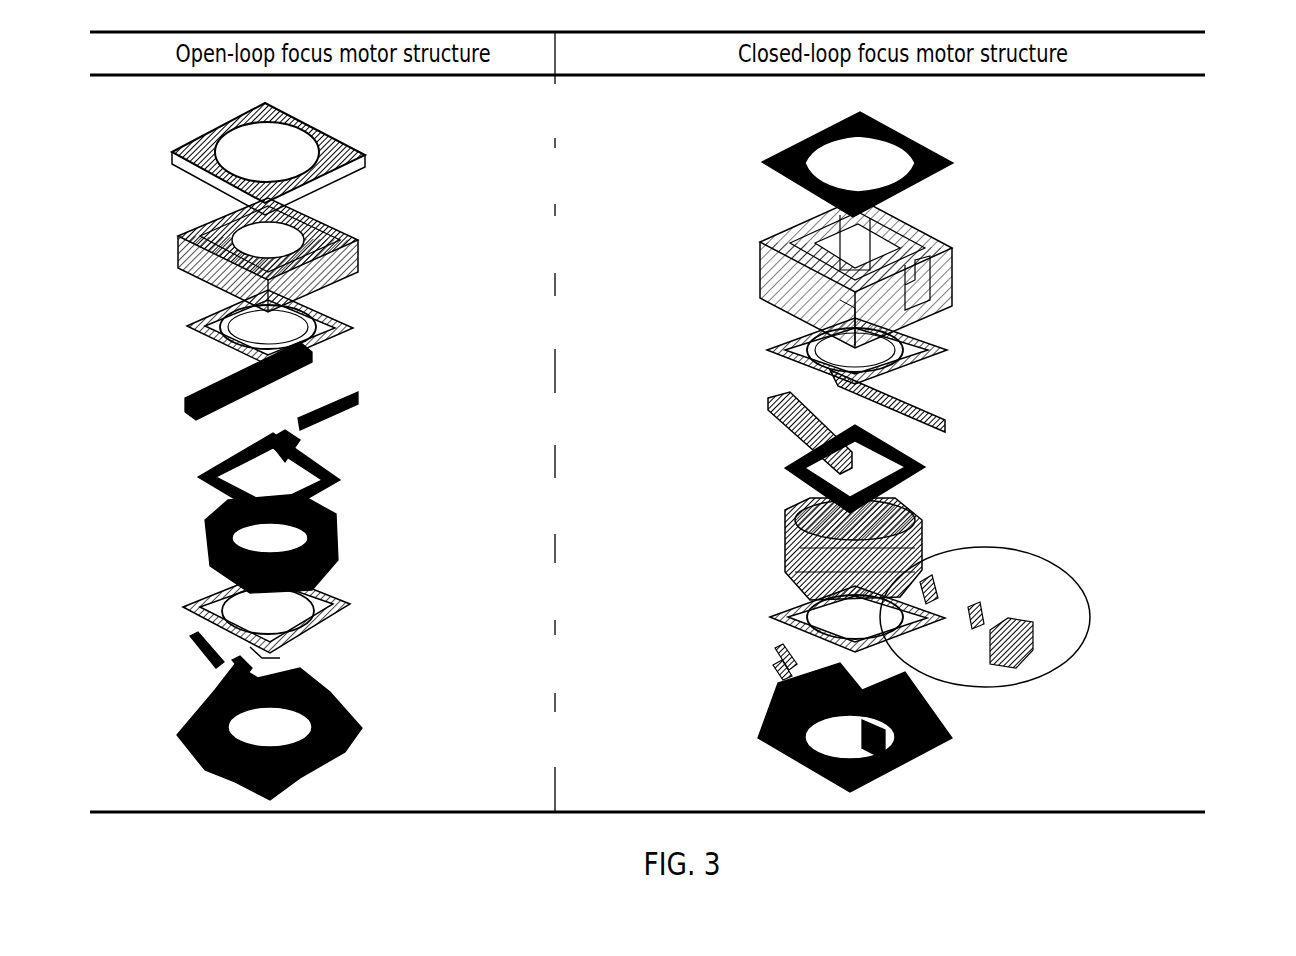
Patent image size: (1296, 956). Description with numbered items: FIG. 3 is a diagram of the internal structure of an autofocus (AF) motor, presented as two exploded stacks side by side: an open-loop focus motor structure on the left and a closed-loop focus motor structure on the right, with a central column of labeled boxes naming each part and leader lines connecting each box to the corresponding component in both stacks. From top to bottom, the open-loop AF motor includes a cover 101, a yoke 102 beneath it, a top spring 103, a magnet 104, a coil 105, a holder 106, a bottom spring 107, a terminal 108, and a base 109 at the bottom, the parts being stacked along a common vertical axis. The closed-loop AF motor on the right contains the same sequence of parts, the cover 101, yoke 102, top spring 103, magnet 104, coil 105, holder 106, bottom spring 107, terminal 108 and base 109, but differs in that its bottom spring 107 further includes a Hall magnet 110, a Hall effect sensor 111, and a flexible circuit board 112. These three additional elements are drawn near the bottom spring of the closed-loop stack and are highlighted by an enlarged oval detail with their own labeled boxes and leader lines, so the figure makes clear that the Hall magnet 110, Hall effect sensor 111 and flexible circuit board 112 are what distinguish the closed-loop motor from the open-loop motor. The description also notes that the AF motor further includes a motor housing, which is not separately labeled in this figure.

The cover 101 is at (757, 152).
The yoke 102 is at (756, 236).
The top spring 103 is at (754, 318).
The magnet 104 is at (764, 396).
The coil 105 is at (780, 466).
The holder 106 is at (786, 546).
The bottom spring 107 is at (766, 608).
The terminal 108 is at (766, 664).
The base 109 is at (752, 738).
The Hall magnet 110 is at (952, 568).
The Hall effect sensor 111 is at (998, 598).
The flexible circuit board 112 is at (1024, 674).